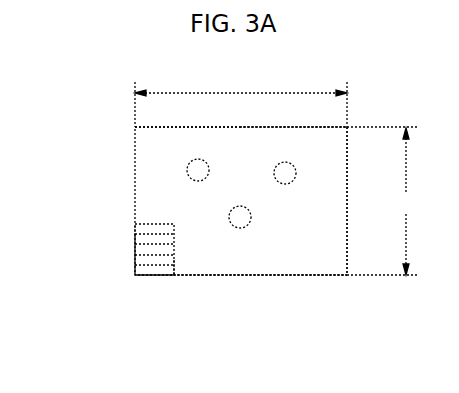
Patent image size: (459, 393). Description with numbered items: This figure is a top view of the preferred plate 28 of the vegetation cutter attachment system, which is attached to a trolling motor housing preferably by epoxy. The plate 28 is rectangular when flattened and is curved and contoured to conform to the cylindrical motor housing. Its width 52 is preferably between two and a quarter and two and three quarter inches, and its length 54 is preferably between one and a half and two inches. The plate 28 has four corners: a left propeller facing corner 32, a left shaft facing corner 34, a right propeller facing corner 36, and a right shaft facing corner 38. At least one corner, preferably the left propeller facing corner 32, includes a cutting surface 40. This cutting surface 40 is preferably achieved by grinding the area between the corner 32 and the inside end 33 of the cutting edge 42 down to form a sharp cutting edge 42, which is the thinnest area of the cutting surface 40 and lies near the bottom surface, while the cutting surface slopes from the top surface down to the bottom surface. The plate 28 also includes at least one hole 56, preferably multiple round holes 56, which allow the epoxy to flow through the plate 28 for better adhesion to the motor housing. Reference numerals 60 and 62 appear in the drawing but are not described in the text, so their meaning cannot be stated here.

The plate 28 is at (251, 153).
The left propeller facing corner 32 is at (80, 282).
The inside end 33 is at (201, 303).
The left shaft facing corner 34 is at (388, 228).
The right propeller facing corner 36 is at (132, 118).
The right shaft facing corner 38 is at (347, 128).
The cutting surface 40 is at (128, 254).
The cutting edge 42 is at (117, 319).
The width 52 is at (241, 100).
The length 54 is at (382, 201).
The hole 56 is at (218, 250).
The bottom edge 60 is at (260, 300).
The diagonal fold line 62 is at (119, 154).